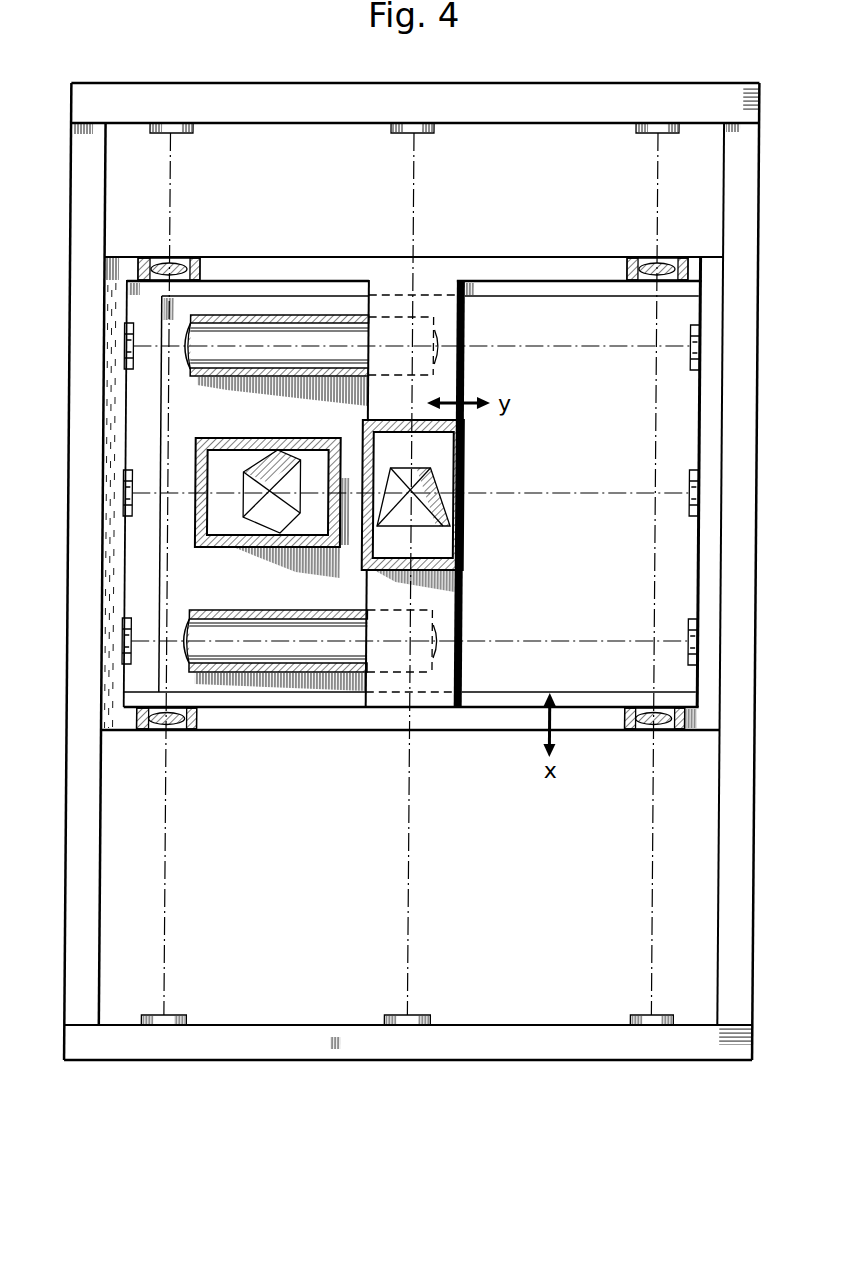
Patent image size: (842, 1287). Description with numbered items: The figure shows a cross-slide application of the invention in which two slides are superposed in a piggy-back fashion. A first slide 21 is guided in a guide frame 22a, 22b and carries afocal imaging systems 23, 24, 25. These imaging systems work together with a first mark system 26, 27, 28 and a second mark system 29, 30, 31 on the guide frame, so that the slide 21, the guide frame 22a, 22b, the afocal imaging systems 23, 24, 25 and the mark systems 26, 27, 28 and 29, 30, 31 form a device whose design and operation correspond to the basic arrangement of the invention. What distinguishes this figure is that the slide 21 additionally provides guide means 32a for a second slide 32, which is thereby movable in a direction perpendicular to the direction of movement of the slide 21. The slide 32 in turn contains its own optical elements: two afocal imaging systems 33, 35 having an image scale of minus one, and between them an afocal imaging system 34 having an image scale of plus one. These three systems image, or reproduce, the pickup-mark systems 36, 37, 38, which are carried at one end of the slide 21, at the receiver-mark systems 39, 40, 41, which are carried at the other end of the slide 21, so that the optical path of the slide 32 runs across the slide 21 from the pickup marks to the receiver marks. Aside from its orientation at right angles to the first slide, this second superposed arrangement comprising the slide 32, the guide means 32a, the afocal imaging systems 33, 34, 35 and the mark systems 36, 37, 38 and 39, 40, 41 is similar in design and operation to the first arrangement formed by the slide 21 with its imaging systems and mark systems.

The slide 21 is at (447, 271).
The guide frame 22a is at (724, 905).
The guide frame 22b is at (498, 1045).
The afocal imaging system 23 is at (179, 264).
The afocal imaging system 24 is at (444, 541).
The afocal imaging system 25 is at (667, 263).
The mark system 26 is at (186, 130).
The mark system 27 is at (433, 133).
The mark system 28 is at (669, 133).
The mark system 29 is at (178, 1013).
The mark system 30 is at (418, 1013).
The mark system 31 is at (660, 1014).
The slide 32 is at (468, 668).
The guide means 32a is at (528, 288).
The afocal imaging system 33 is at (265, 318).
The afocal imaging system 34 is at (224, 519).
The afocal imaging system 35 is at (310, 646).
The pickup-mark system 36 is at (135, 356).
The pickup-mark system 37 is at (132, 474).
The pickup-mark system 38 is at (133, 626).
The receiver-mark system 39 is at (691, 359).
The receiver-mark system 40 is at (692, 509).
The receiver-mark system 41 is at (693, 639).